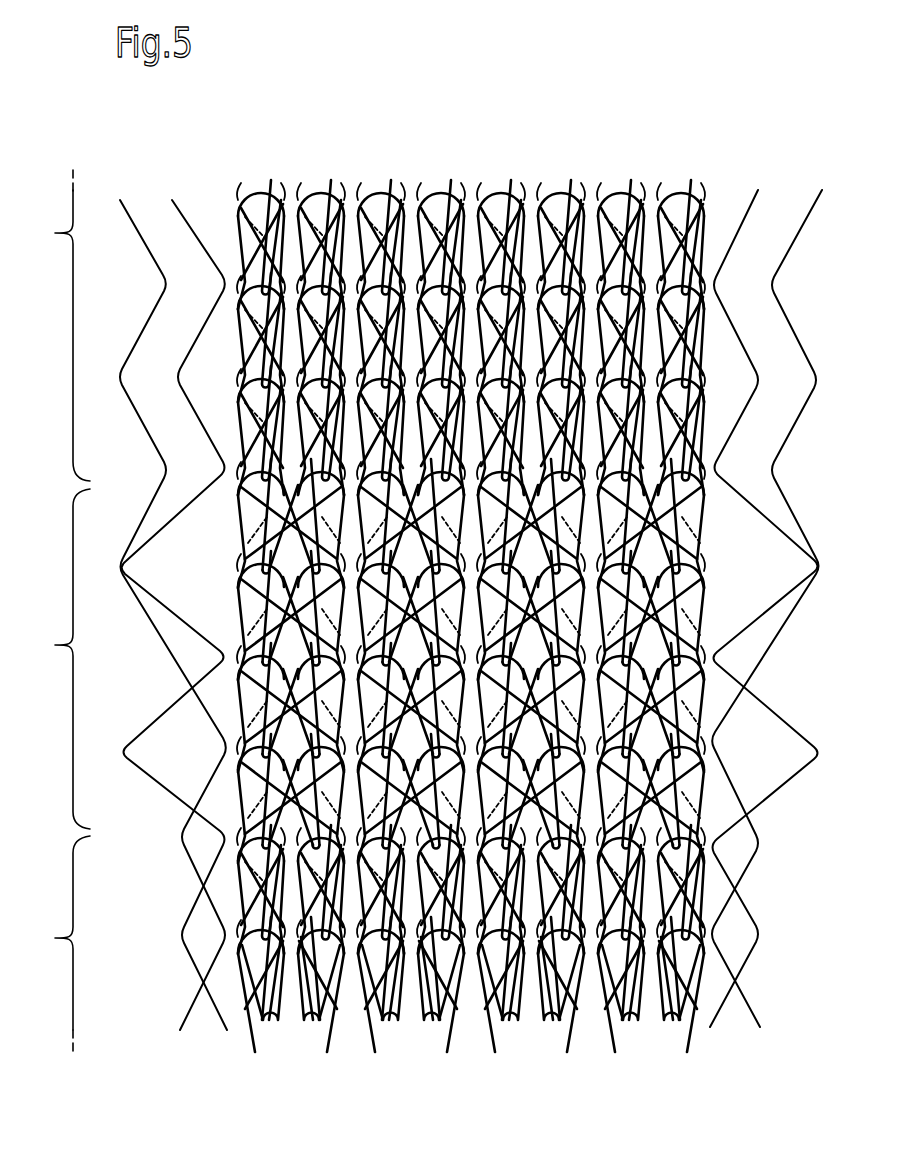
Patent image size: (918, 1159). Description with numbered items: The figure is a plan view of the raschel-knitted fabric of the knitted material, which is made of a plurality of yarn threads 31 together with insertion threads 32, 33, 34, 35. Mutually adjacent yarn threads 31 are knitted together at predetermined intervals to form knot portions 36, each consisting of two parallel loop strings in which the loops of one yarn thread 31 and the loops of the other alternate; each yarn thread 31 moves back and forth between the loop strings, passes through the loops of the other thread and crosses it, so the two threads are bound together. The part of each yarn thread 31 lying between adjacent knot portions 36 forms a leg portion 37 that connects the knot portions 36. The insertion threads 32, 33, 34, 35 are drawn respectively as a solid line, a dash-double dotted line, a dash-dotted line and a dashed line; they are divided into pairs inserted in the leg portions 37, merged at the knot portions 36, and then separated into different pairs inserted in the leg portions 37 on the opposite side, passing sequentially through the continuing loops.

The yarn thread 31 is at (266, 186).
The insertion thread 32 is at (758, 190).
The insertion thread 33 is at (172, 200).
The insertion thread 34 is at (822, 190).
The insertion thread 35 is at (120, 200).
The knot portion 36 is at (58, 659).
The leg portion 37 is at (58, 611).